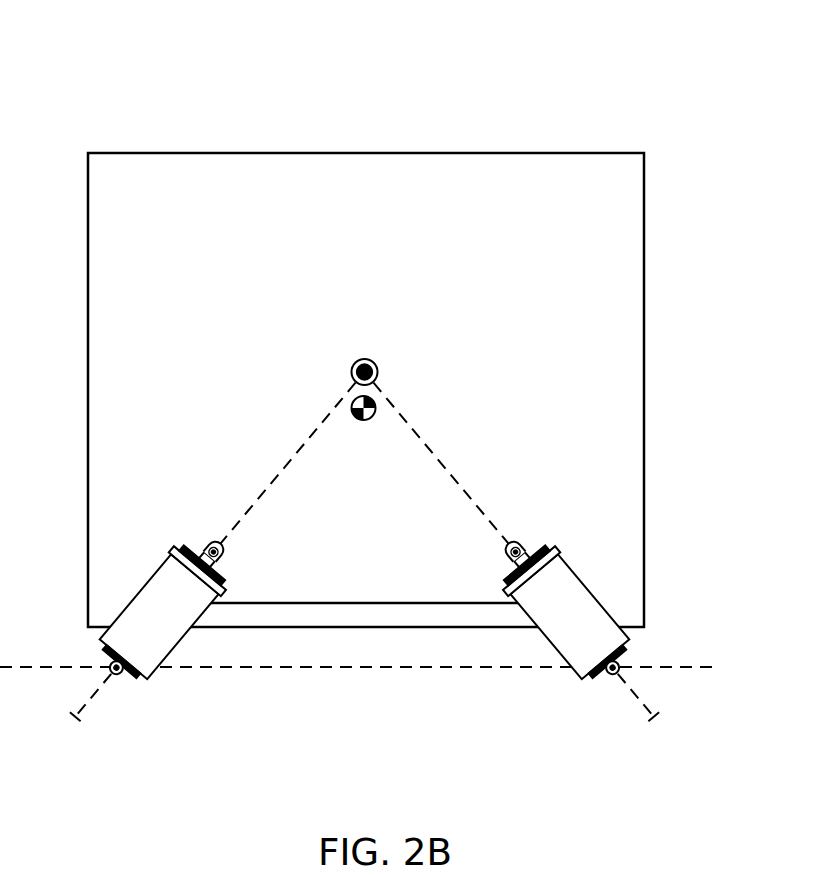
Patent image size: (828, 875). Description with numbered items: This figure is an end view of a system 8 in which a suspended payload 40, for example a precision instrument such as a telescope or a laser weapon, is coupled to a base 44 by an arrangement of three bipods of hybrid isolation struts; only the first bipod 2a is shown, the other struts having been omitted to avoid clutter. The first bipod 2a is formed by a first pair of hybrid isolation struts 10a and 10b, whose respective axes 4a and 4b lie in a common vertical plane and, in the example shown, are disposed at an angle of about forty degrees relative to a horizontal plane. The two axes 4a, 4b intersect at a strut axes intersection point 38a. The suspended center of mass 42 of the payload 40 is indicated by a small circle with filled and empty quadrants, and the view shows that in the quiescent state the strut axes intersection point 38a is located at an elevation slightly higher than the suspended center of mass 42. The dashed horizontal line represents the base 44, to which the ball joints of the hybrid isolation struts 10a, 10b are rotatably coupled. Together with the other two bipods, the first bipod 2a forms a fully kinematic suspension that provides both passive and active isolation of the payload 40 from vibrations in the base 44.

The system 8 is at (226, 76).
The payload 40 is at (436, 153).
The strut axes intersection point 38a is at (352, 365).
The suspended center of mass 42 is at (372, 420).
The first bipod 2a is at (528, 499).
The hybrid isolation strut 10a is at (604, 607).
The hybrid isolation strut 10b is at (126, 606).
The axis 4a is at (634, 695).
The axis 4b is at (76, 718).
The base 44 is at (677, 674).